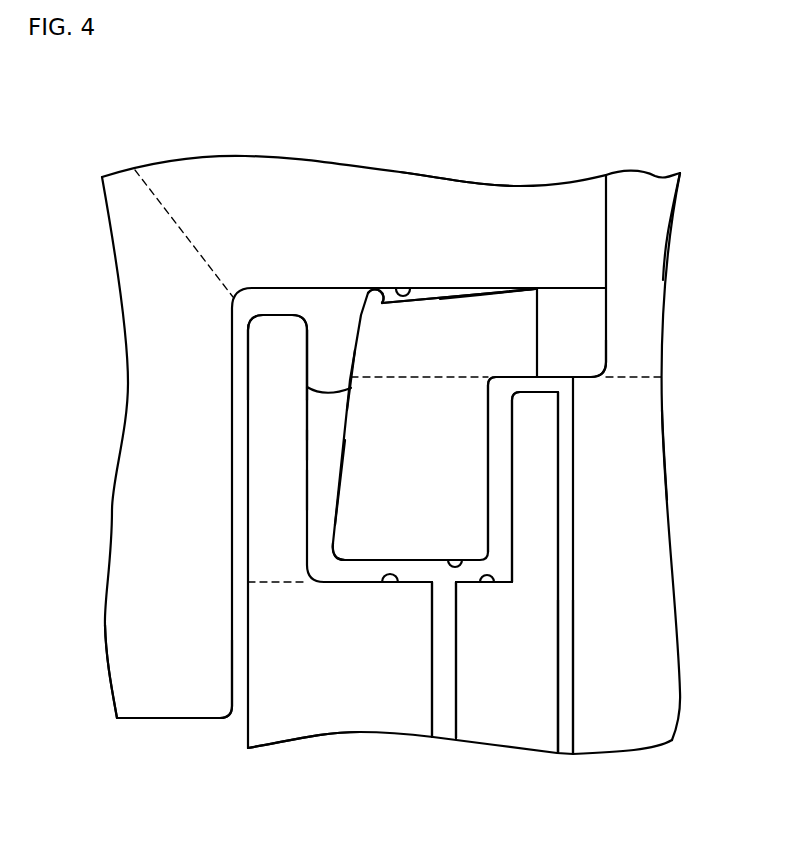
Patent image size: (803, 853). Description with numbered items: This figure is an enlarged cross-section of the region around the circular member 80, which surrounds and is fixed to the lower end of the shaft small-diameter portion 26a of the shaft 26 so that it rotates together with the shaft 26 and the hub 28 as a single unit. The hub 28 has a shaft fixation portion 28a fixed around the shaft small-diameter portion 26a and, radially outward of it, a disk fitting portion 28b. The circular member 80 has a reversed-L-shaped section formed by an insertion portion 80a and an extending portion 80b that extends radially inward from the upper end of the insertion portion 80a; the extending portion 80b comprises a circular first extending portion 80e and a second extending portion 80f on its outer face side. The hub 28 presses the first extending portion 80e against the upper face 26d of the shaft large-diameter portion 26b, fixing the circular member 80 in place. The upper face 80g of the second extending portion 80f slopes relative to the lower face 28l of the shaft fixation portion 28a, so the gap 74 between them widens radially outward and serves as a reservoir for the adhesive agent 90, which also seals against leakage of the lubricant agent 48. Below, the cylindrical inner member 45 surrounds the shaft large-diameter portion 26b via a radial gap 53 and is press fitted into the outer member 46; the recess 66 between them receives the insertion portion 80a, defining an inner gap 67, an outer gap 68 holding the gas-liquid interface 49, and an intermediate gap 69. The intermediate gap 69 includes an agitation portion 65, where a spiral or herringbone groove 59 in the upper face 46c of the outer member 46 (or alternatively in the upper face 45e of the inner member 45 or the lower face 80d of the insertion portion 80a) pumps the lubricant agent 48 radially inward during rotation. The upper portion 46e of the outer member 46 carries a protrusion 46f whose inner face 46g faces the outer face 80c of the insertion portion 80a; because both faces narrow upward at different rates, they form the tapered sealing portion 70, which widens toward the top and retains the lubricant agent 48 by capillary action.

The shaft 26 is at (653, 318).
The shaft small-diameter portion 26a is at (653, 243).
The shaft large-diameter portion 26b is at (655, 440).
The upper face of the shaft large-diameter portion 26d is at (587, 366).
The hub 28 is at (343, 183).
The shaft fixation portion 28a is at (435, 193).
The disk fitting portion 28b is at (148, 702).
The lower face of the shaft fixation portion 28l is at (410, 290).
The inner member 45 is at (533, 612).
The upper face of the inner member 45e is at (493, 582).
The outer member 46 is at (272, 612).
The upper face of the outer member 46c is at (386, 582).
The upper portion of the outer member 46e is at (268, 727).
The protrusion 46f is at (270, 350).
The inner face of the protrusion 46g is at (307, 366).
The lubricant agent 48 is at (317, 487).
The gas-liquid interface 49 is at (330, 390).
The radial gap 53 is at (565, 657).
The groove 59 is at (419, 570).
The agitation portion 65 is at (410, 570).
The recess 66 is at (376, 582).
The inner gap 67 is at (500, 478).
The outer gap 68 is at (317, 442).
The intermediate gap 69 is at (363, 572).
The tapered sealing portion 70 is at (325, 420).
The gap 74 is at (383, 298).
The circular member 80 is at (385, 467).
The insertion portion 80a is at (362, 510).
The extending portion 80b is at (483, 101).
The outer face of the insertion portion 80c is at (342, 438).
The lower face of the insertion portion 80d is at (462, 560).
The first extending portion 80e is at (561, 303).
The second extending portion 80f is at (502, 313).
The upper face of the second extending portion 80g is at (452, 300).
The adhesive agent 90 is at (420, 297).